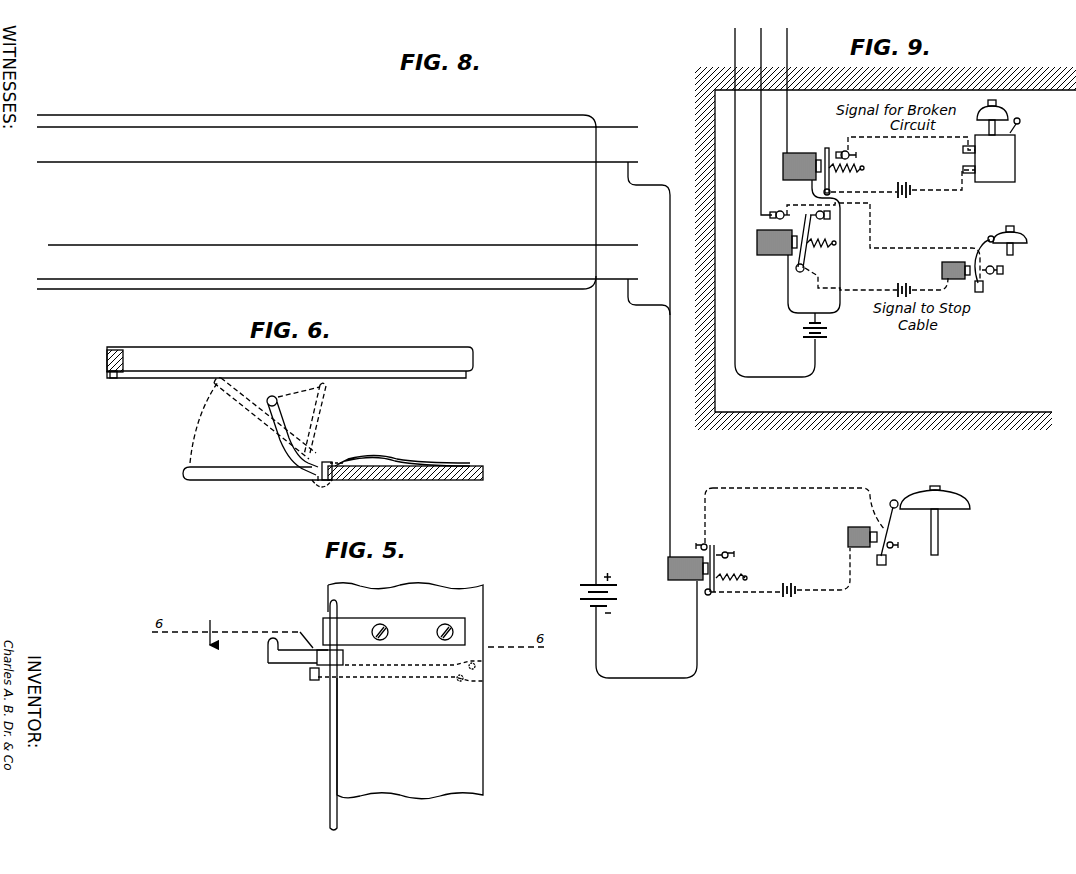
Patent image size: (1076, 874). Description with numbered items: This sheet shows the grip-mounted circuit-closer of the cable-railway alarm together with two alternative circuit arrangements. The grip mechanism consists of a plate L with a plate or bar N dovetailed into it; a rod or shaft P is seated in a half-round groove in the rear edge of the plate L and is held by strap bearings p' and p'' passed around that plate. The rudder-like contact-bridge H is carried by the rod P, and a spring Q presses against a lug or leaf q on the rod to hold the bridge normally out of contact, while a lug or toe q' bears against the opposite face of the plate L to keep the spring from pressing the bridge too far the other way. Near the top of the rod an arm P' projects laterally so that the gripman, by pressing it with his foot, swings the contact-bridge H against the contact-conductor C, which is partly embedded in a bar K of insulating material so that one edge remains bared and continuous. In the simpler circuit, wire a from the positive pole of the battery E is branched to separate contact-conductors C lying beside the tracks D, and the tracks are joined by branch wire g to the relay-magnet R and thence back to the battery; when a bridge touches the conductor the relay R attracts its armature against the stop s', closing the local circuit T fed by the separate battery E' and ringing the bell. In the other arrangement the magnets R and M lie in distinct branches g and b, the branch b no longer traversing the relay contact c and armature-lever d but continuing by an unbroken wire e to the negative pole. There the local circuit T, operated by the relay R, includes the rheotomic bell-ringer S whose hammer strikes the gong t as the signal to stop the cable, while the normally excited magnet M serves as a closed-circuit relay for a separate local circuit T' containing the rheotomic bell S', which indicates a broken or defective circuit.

In FIG. 8, the contact-conductor C is at (316, 200).
In FIG. 6, the contact-conductor C is at (113, 378).
In FIG. 8, the tracks D is at (337, 203).
In FIG. 8, the circuit-wire a is at (604, 355).
In FIG. 9, the circuit-wire a is at (775, 202).
In FIG. 8, the branch wire g is at (646, 420).
In FIG. 9, the branch wire g is at (767, 121).
In FIG. 9, the wire b is at (793, 90).
In FIG. 9, the wire e is at (820, 254).
In FIG. 8, the battery E is at (586, 593).
In FIG. 9, the battery E is at (802, 327).
In FIG. 8, the separate battery E' is at (797, 600).
In FIG. 8, the relay-magnet R is at (705, 574).
In FIG. 9, the relay-magnet R is at (776, 252).
In FIG. 9, the magnet M is at (823, 164).
In FIG. 8, the stop s' is at (715, 523).
In FIG. 9, the rheotome S is at (1001, 263).
In FIG. 9, the rheotomic bell S' is at (993, 137).
In FIG. 8, the local circuit T is at (840, 539).
In FIG. 9, the local circuit T is at (895, 250).
In FIG. 9, the separate local circuit T' is at (903, 167).
In FIG. 9, the gong t is at (986, 250).
In FIG. 9, the contact c is at (800, 224).
In FIG. 9, the armature-lever d is at (816, 243).
In FIG. 6, the bar of insulating material K is at (290, 354).
In FIG. 6, the contact-bridge H is at (256, 465).
In FIG. 6, the plate L is at (405, 484).
In FIG. 5, the plate L is at (405, 691).
In FIG. 6, the plate or bar N is at (402, 455).
In FIG. 6, the rod or shaft P is at (316, 498).
In FIG. 5, the rod or shaft P is at (321, 715).
In FIG. 6, the arm P' is at (258, 426).
In FIG. 5, the bearing p' is at (286, 658).
In FIG. 5, the bearing p'' is at (394, 631).
In FIG. 6, the lug or leaf q is at (329, 455).
In FIG. 5, the lug or leaf q is at (313, 687).
In FIG. 6, the lug or toe q' is at (334, 493).
In FIG. 5, the lug or toe q' is at (343, 657).
In FIG. 6, the spring Q is at (358, 460).
In FIG. 5, the spring Q is at (310, 672).